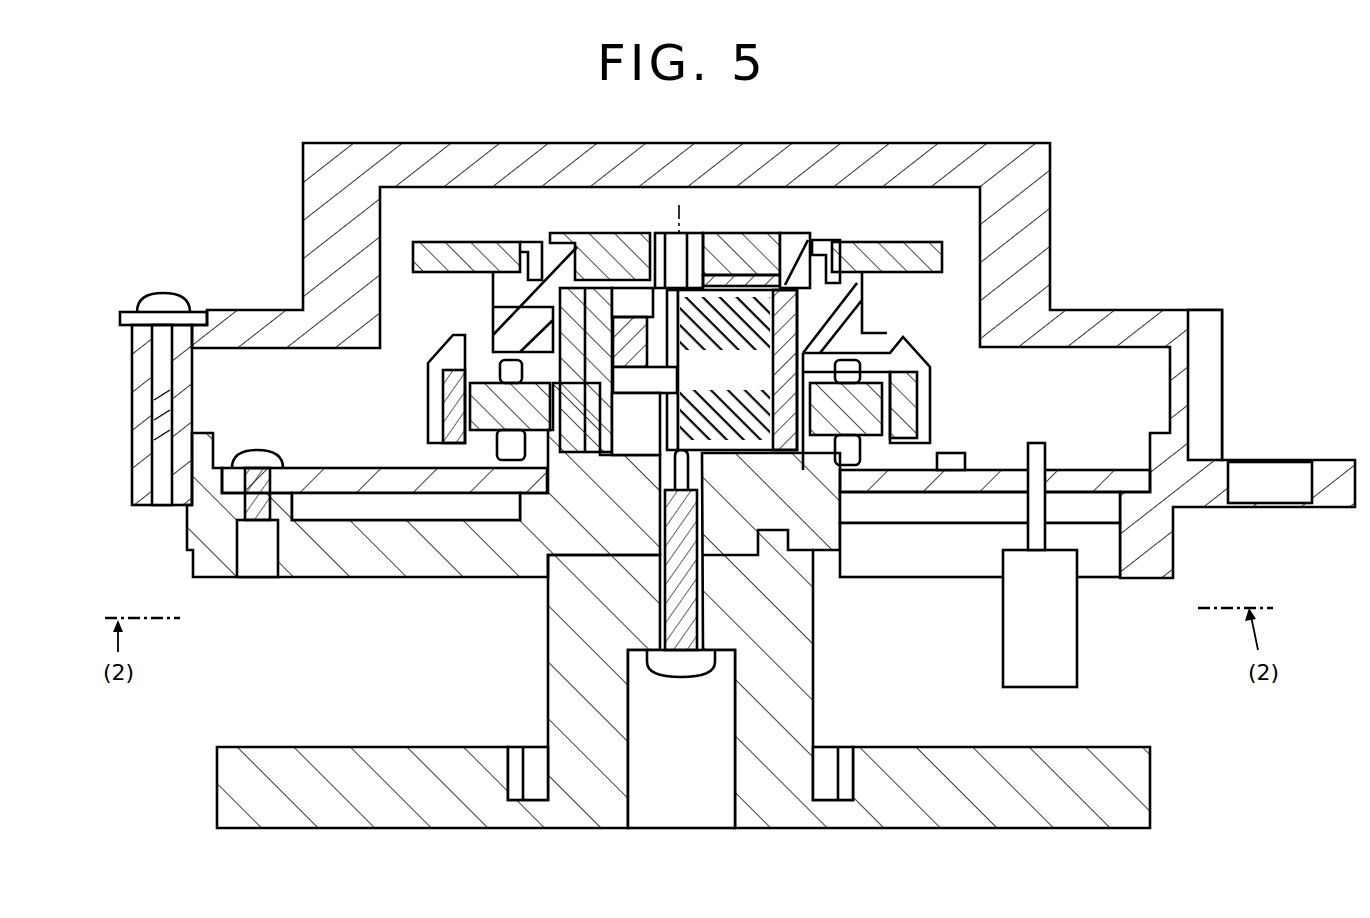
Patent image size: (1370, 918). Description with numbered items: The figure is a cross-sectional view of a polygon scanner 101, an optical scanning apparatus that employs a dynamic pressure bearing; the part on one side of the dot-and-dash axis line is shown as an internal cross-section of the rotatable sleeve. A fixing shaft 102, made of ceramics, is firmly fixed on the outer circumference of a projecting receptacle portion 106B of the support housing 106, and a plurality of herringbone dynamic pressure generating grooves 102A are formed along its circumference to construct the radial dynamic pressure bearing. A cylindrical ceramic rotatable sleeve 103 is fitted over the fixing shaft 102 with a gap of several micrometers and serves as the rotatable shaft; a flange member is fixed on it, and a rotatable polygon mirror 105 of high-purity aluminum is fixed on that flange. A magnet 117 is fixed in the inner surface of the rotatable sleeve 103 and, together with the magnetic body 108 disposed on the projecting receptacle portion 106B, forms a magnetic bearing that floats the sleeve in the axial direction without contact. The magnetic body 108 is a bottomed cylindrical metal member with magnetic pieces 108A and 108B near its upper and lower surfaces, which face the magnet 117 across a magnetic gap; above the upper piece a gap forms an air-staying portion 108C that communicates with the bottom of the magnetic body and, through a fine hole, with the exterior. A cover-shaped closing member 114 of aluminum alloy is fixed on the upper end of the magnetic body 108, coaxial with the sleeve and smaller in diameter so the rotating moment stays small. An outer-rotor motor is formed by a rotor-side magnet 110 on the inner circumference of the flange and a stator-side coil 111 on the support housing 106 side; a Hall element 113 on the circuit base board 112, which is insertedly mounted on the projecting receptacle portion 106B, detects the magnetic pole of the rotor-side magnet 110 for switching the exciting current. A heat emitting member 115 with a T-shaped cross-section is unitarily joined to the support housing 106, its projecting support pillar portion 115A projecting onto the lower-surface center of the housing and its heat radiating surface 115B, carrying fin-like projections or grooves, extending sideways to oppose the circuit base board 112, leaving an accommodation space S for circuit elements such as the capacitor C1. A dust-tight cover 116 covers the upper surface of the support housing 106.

The polygon scanner 101 is at (1140, 170).
The fixing shaft 102 is at (803, 370).
The herringbone dynamic pressure generating grooves 102A is at (772, 358).
The rotatable sleeve 103 is at (818, 353).
The rotatable polygon mirror 105 is at (922, 246).
The support housing 106 is at (333, 580).
The projecting receptacle portion 106B is at (655, 432).
The magnetic body 108 is at (694, 232).
The magnetic piece 108A is at (635, 328).
The magnetic piece 108B is at (643, 425).
The air-staying portion 108C is at (632, 298).
The rotor-side magnet 110 is at (930, 443).
The stator-side coil 111 is at (878, 435).
The circuit base board 112 is at (1094, 468).
The Hall element 113 is at (957, 456).
The closing member 114 is at (736, 246).
The heat emitting member 115 is at (290, 744).
The projecting support pillar portion 115A is at (547, 637).
The heat radiating surface 115B is at (441, 728).
The dust-tight cover 116 is at (924, 152).
The magnet 117 is at (640, 354).
The capacitor C1 is at (1078, 665).
The accommodation space S is at (1127, 586).